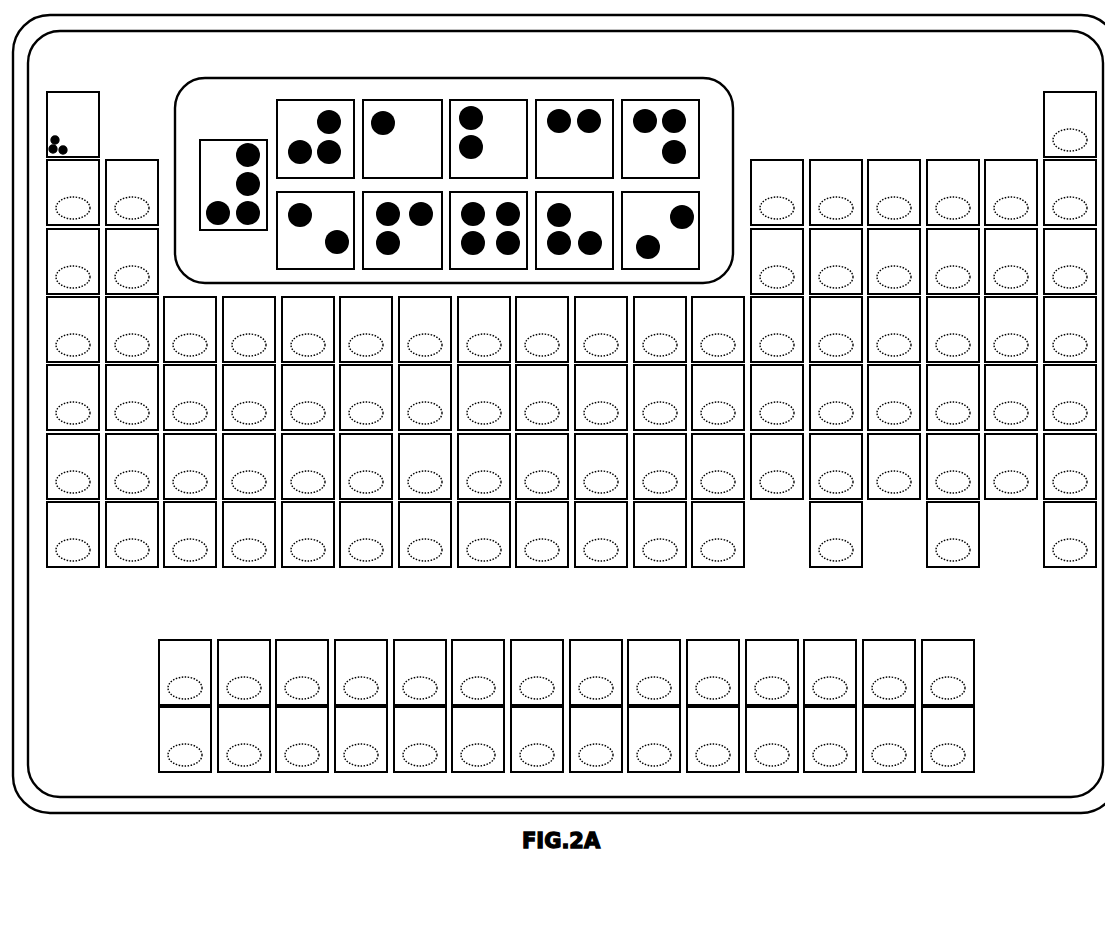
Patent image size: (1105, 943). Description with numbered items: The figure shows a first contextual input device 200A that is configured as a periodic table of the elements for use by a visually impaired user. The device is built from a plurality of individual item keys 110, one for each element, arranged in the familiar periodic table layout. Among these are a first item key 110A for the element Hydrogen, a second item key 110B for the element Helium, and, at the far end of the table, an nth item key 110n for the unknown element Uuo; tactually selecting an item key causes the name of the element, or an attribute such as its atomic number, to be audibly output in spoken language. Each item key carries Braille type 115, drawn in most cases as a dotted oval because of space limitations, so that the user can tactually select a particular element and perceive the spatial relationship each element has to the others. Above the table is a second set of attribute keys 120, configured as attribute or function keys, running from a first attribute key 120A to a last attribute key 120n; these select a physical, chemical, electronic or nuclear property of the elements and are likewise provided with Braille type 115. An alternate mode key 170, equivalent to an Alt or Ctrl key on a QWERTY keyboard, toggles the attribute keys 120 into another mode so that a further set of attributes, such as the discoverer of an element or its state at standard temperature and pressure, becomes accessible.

The contextual input device 200A is at (110, 777).
The item keys 110 is at (70, 628).
The item 110A is at (94, 92).
The second item 110B is at (1068, 92).
The nth item 110n is at (1068, 566).
The Braille type 115 is at (83, 200).
The attribute keys 120 is at (246, 274).
The attribute key 120A is at (383, 100).
The attribute key 120n is at (700, 205).
The alternate mode key 170 is at (231, 140).